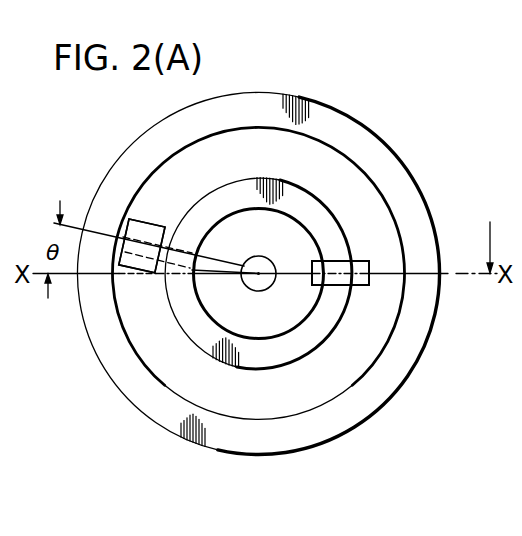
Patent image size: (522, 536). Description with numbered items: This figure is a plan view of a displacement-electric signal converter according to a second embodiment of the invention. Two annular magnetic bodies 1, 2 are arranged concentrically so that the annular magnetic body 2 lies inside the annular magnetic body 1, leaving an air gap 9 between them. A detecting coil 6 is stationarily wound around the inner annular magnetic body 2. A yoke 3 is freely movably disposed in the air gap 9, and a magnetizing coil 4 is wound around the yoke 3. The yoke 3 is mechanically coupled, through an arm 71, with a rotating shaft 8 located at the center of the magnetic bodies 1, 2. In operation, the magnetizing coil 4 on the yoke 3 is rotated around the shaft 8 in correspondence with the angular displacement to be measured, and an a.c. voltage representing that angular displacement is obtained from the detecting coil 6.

The annular magnetic body 1 is at (425, 347).
The annular magnetic body 2 is at (262, 371).
The yoke 3 is at (145, 247).
The magnetizing coil 4 is at (137, 272).
The detecting coil 6 is at (362, 260).
The arm 71 is at (221, 262).
The rotating shaft 8 is at (266, 292).
The air gap 9 is at (352, 362).